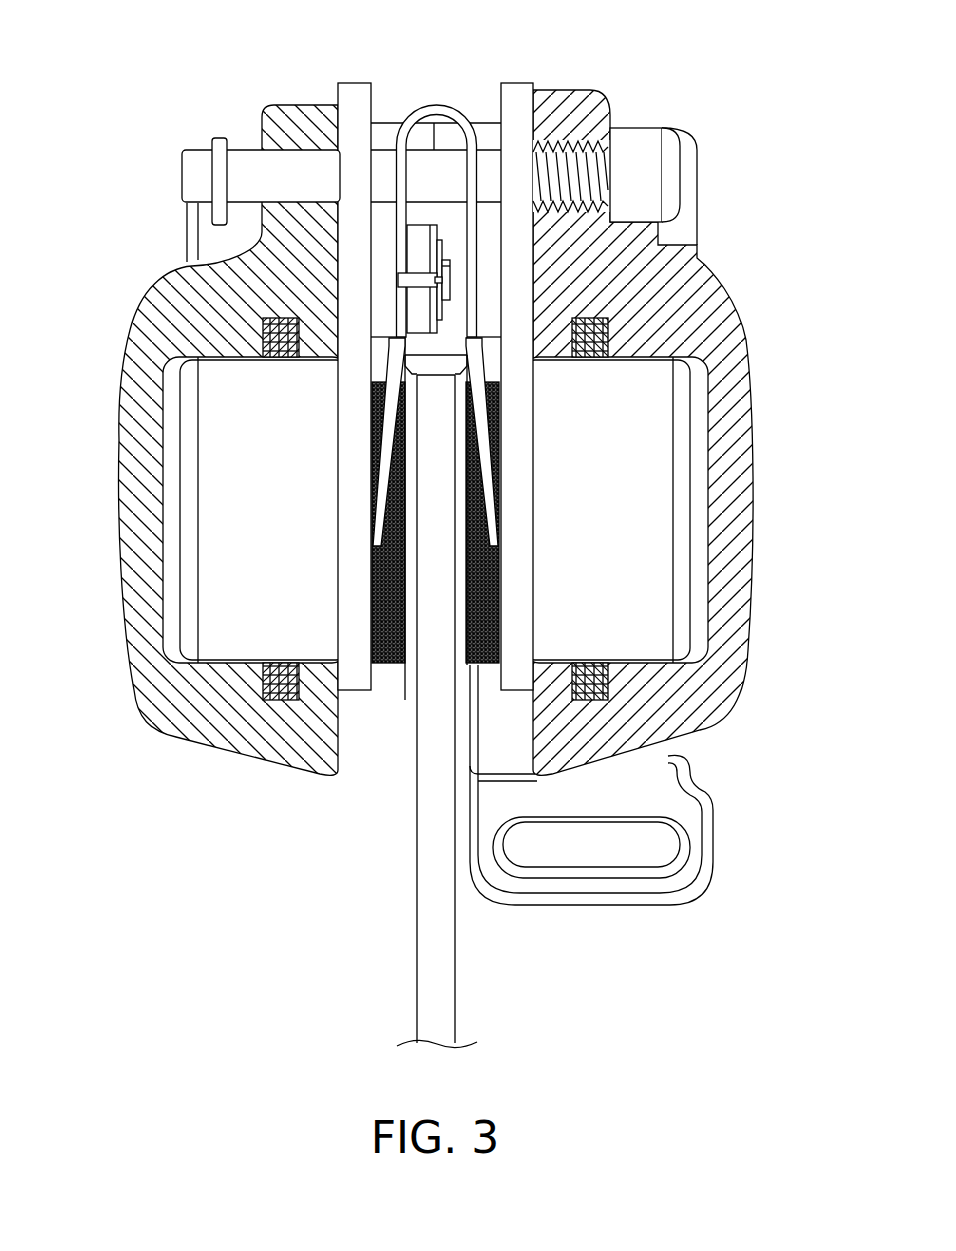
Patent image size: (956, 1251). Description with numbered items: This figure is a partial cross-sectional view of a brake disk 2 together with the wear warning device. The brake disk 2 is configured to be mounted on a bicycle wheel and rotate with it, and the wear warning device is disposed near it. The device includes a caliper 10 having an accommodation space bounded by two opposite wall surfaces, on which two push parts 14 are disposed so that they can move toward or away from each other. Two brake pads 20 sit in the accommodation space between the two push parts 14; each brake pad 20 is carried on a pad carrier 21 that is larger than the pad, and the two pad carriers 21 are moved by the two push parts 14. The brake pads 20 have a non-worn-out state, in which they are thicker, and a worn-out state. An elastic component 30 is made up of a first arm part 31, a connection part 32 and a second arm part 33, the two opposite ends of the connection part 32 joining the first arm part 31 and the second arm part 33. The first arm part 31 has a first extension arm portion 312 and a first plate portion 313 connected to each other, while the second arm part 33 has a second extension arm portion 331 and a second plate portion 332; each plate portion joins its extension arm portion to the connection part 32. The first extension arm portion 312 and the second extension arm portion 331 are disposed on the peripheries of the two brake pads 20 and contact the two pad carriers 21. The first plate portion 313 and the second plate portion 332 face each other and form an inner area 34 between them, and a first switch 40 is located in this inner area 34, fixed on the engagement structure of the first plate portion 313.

The brake disk 2 is at (434, 968).
The caliper 10 is at (708, 323).
The push parts 14 is at (245, 499).
The brake pads 20 is at (390, 622).
The pad carriers 21 is at (351, 545).
The elastic component 30 is at (451, 181).
The first arm part 31 is at (221, 297).
The first extension arm portion 312 is at (387, 440).
The first plate portion 313 is at (402, 253).
The connection part 32 is at (441, 112).
The second arm part 33 is at (650, 468).
The second extension arm portion 331 is at (487, 440).
The second plate portion 332 is at (470, 268).
The inner area 34 is at (456, 221).
The first switch 40 is at (422, 243).